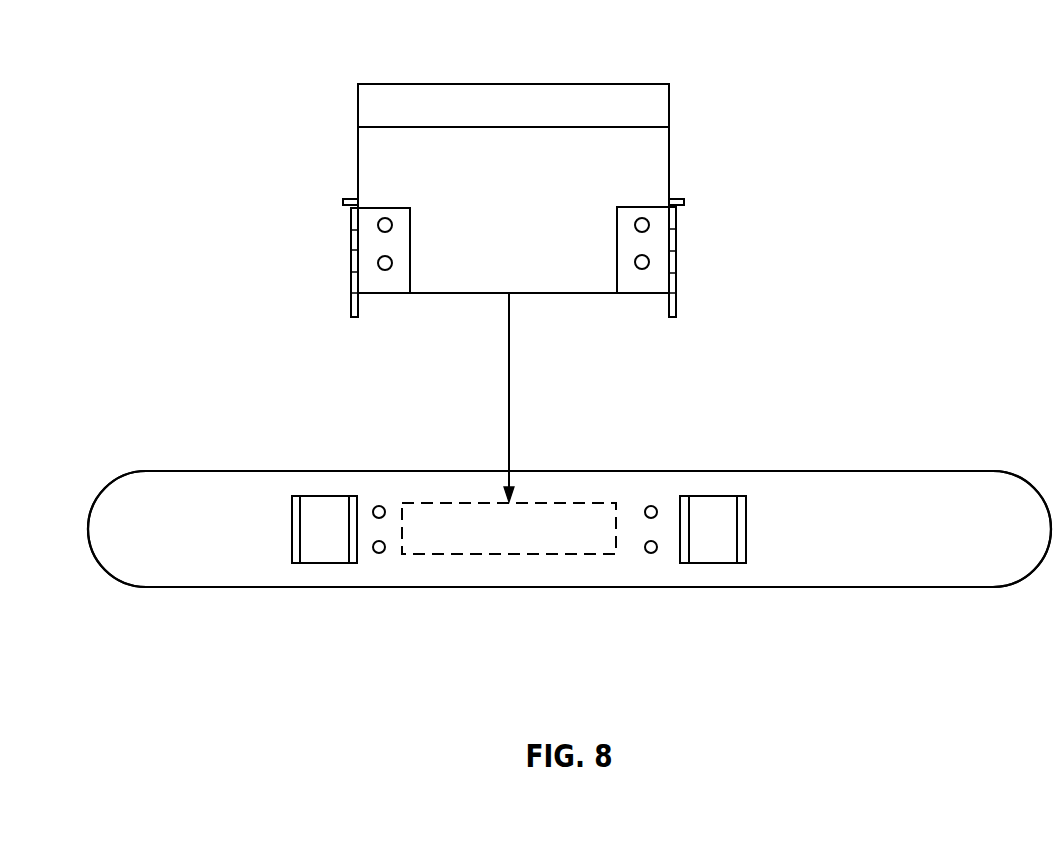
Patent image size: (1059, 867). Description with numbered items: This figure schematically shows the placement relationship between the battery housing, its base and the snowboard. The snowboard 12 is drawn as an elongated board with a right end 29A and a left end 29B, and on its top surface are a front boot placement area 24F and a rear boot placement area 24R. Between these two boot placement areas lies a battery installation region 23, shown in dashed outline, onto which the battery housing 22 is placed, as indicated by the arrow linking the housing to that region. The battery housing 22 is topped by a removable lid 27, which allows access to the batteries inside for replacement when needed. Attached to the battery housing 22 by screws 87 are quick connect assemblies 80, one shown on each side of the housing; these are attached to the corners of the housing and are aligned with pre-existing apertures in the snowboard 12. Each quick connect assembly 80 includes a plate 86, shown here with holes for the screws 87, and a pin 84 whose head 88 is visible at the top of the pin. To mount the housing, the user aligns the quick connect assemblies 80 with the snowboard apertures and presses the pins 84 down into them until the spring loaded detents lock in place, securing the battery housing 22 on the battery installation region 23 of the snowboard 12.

The removable lid 27 is at (657, 95).
The battery housing 22 is at (447, 282).
The quick connect assemblies 80 is at (332, 233).
The head 88 is at (353, 197).
The pin 84 is at (353, 313).
The plate 86 is at (380, 282).
The screws 87 is at (649, 263).
The snowboard 12 is at (170, 552).
The right end 29A is at (148, 470).
The left end 29B is at (990, 470).
The front boot placement area 24F is at (322, 553).
The rear boot placement area 24R is at (710, 553).
The battery installation region 23 is at (517, 543).